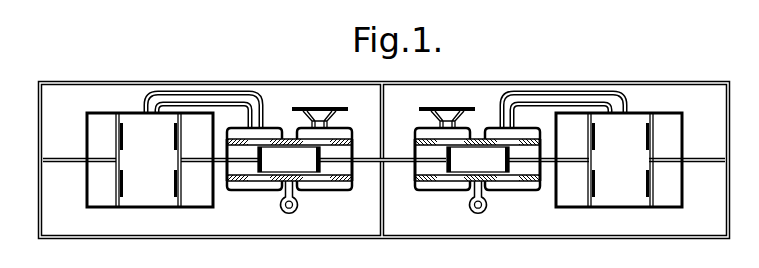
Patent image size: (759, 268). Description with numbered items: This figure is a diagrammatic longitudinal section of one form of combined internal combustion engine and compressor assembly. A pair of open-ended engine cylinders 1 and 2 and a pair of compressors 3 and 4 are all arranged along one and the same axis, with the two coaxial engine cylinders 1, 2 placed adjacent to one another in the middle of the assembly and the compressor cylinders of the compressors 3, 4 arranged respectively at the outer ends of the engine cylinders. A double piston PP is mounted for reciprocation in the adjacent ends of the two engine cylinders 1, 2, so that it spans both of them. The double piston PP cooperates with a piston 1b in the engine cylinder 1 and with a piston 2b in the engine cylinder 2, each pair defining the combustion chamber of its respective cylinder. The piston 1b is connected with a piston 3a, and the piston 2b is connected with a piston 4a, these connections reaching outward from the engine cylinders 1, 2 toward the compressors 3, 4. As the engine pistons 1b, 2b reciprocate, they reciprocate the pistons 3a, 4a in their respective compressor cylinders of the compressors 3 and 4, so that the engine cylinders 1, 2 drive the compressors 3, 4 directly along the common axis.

The engine cylinder 1 is at (309, 168).
The piston 1b is at (256, 168).
The engine cylinder 2 is at (500, 167).
The piston 2b is at (508, 165).
The compressor 3 is at (148, 197).
The piston 3a is at (179, 135).
The compressor 4 is at (631, 198).
The piston 4a is at (590, 140).
The double piston PP is at (373, 163).